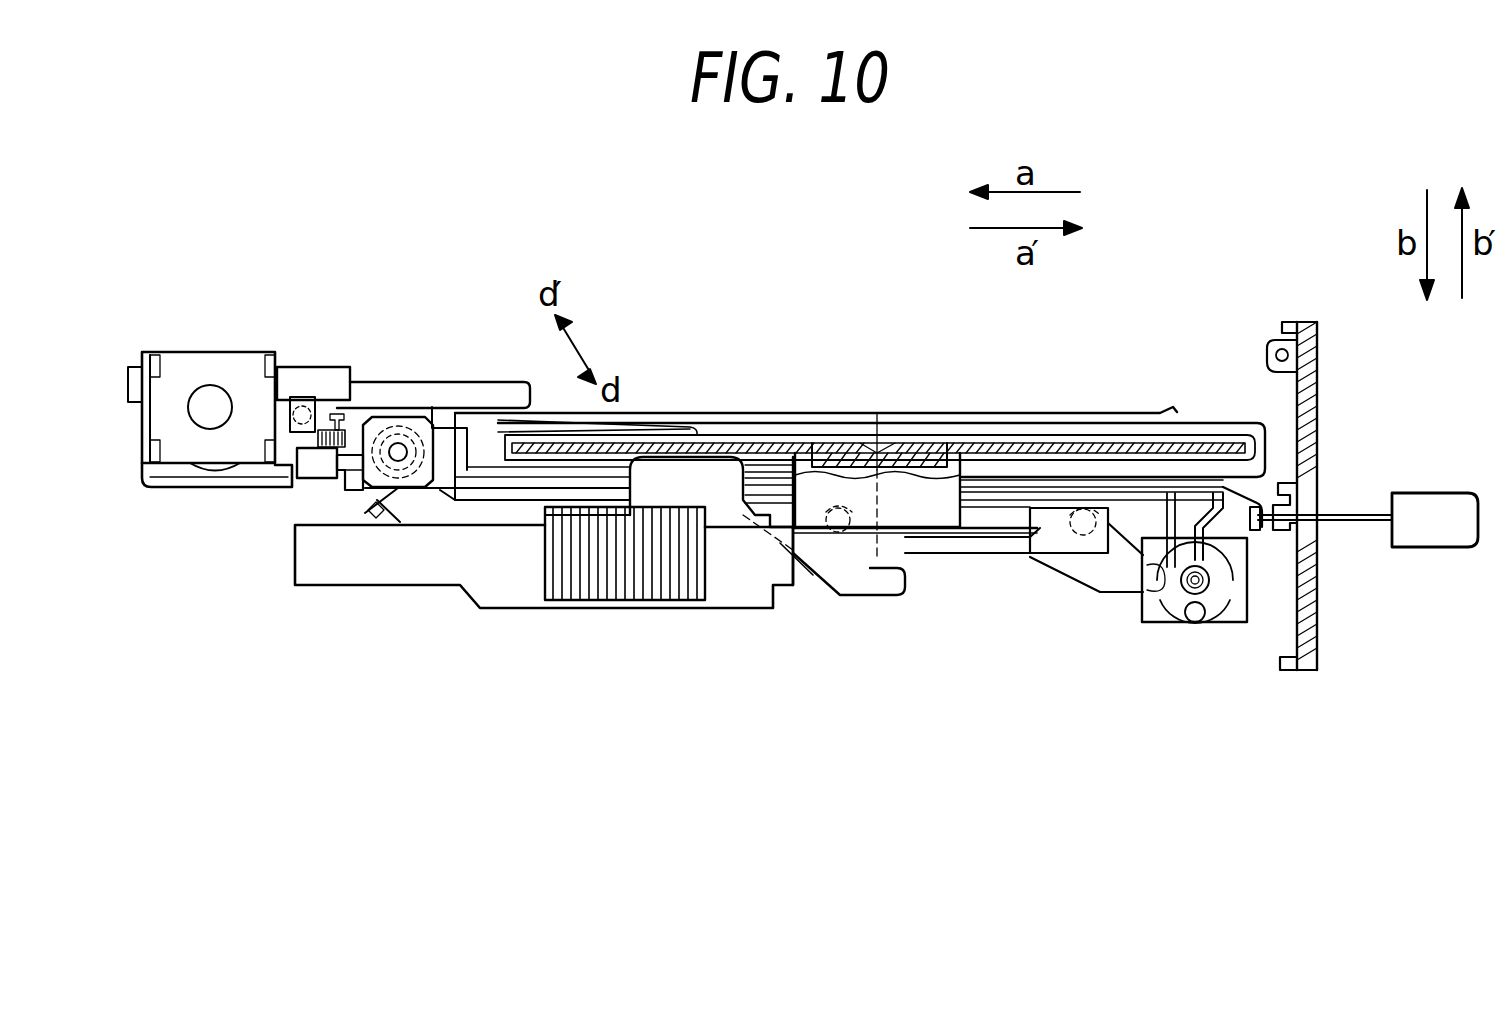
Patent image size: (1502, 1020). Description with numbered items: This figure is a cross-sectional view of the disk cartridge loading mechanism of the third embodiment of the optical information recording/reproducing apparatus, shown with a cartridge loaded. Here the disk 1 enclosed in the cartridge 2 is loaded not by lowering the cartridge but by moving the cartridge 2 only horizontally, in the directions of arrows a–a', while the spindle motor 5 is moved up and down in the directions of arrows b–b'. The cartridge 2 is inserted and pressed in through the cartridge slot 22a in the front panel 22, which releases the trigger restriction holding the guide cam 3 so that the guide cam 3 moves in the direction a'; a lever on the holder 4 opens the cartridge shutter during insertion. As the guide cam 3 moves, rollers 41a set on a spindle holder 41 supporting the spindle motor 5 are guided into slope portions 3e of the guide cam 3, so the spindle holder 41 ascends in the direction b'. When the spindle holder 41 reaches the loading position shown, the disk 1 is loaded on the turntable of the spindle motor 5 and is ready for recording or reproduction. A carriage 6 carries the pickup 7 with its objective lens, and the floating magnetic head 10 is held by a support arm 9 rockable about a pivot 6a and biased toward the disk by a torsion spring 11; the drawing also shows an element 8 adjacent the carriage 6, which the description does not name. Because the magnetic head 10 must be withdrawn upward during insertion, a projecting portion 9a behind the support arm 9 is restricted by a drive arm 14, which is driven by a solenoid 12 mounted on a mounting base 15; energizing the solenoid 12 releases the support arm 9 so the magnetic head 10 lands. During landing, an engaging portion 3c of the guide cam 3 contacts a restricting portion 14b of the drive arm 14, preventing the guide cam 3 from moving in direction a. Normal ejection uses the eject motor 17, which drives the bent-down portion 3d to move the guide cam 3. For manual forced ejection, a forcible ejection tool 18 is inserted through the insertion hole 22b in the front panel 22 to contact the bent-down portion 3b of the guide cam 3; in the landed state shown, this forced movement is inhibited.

The disk 1 is at (1180, 445).
The cartridge 2 is at (1215, 430).
The guide cam 3 is at (1142, 517).
The bent-down portion 3b is at (1262, 540).
The engaging portion 3c is at (330, 492).
The bent-down portion 3d is at (1140, 596).
The slope portions 3e is at (845, 572).
The holder 4 is at (993, 412).
The spindle motor 5 is at (903, 540).
The carriage 6 is at (720, 596).
The pivot 6a is at (400, 455).
The pickup 7 is at (730, 467).
The coil 8 is at (570, 586).
The support arm 9 is at (400, 402).
The projecting portion 9a is at (297, 398).
The floating magnetic head 10 is at (695, 425).
The torsion spring 11 is at (375, 522).
The solenoid 12 is at (185, 372).
The drive arm 14 is at (318, 380).
The restricting portion 14b is at (300, 470).
The mounting base 15 is at (147, 490).
The eject motor 17 is at (1160, 624).
The forcible ejection tool 18 is at (1350, 505).
The front panel 22 is at (1320, 645).
The cartridge slot 22a is at (1320, 425).
The insertion hole 22b is at (1320, 527).
The spindle holder 41 is at (1005, 517).
The rollers 41a is at (850, 535).